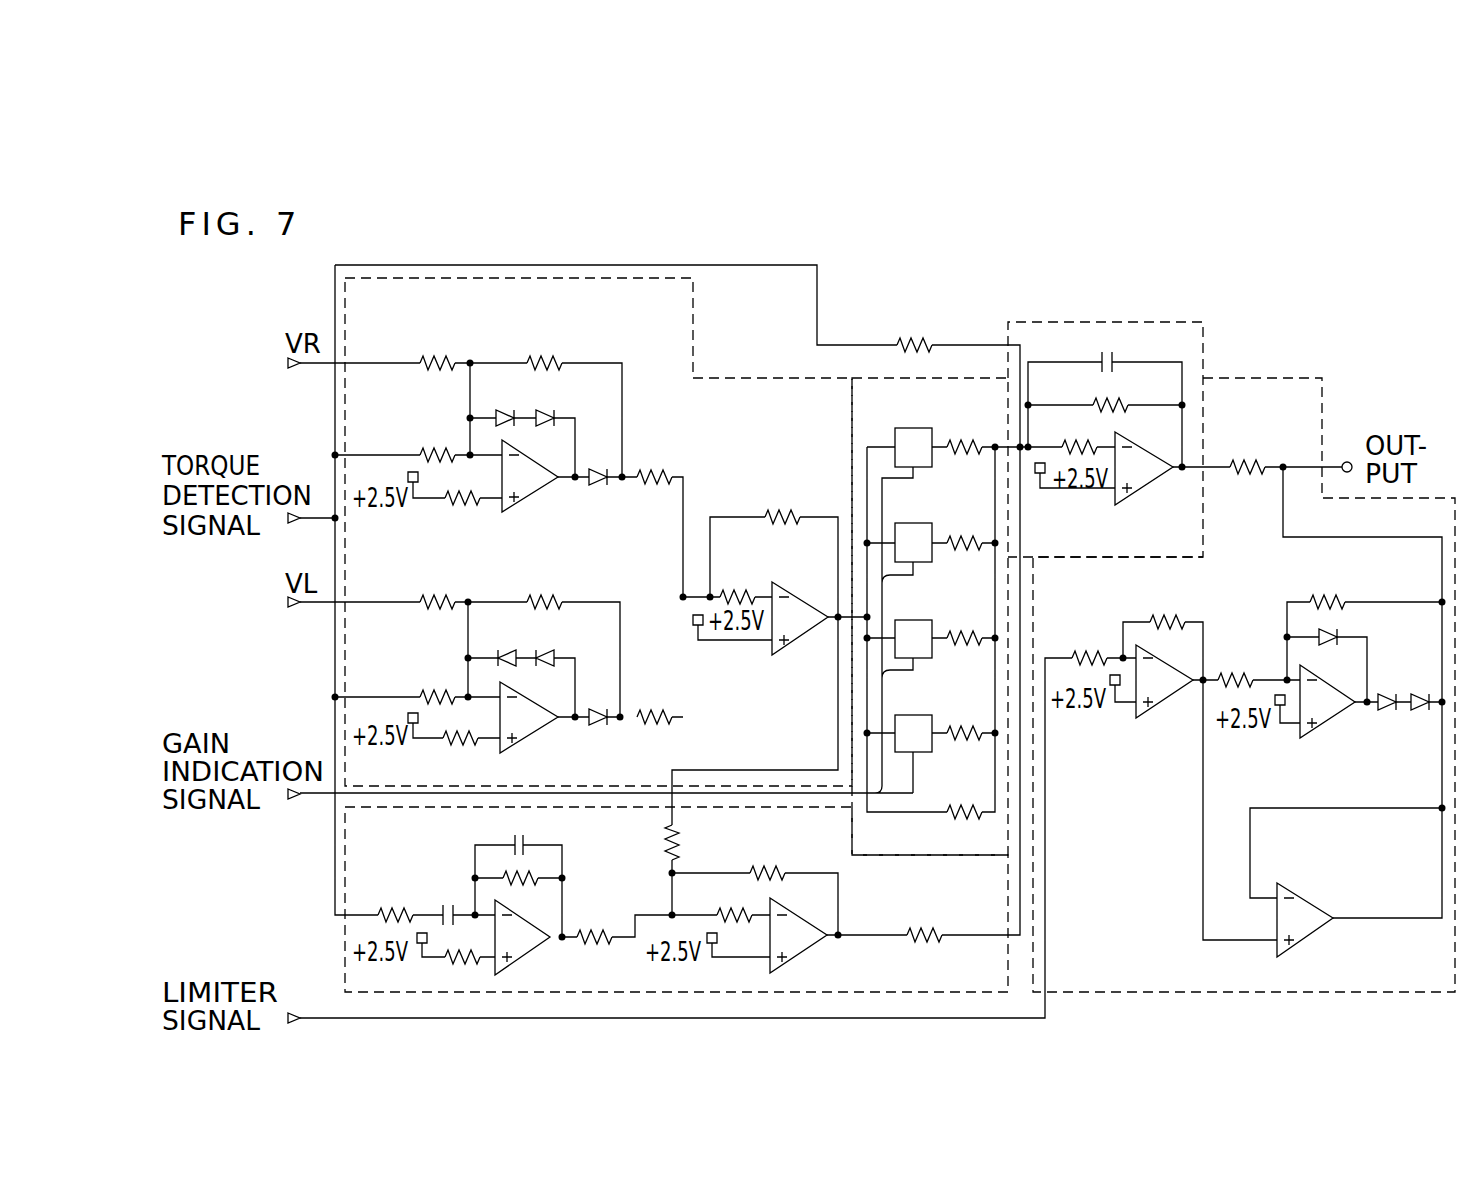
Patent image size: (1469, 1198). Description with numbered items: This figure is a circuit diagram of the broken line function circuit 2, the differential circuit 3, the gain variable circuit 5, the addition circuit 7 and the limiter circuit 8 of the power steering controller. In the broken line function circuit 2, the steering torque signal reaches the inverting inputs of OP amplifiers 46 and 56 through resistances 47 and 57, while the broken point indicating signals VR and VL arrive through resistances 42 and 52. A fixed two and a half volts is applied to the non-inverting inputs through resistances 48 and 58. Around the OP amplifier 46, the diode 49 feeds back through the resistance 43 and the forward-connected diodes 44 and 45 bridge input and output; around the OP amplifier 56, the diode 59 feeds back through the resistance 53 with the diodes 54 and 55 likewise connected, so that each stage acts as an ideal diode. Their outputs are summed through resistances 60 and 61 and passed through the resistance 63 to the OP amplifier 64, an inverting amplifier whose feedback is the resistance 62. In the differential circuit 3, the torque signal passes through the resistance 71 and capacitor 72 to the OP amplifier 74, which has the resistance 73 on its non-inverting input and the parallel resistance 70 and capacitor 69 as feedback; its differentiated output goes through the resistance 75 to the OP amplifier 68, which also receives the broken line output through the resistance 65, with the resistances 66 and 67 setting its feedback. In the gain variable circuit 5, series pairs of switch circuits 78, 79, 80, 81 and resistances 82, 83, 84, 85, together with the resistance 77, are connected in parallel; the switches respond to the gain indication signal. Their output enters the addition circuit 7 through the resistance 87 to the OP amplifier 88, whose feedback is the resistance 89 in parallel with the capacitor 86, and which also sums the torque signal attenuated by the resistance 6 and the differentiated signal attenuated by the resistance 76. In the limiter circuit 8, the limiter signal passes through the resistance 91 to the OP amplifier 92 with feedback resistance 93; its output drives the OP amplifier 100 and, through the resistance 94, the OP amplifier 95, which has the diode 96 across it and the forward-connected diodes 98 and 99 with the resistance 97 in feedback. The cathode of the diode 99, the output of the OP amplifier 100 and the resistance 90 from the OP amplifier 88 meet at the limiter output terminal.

The broken line function circuit 2 is at (693, 328).
The differential circuit 3 is at (342, 978).
The gain variable circuit 5 is at (973, 378).
The resistance 6 is at (920, 332).
The addition circuit 7 is at (1155, 322).
The limiter circuit 8 is at (1267, 377).
The resistance 42 is at (441, 350).
The resistance 43 is at (545, 350).
The diode 44 is at (502, 411).
The diode 45 is at (550, 413).
The OP amplifier 46 is at (534, 500).
The resistance 47 is at (440, 447).
The resistance 48 is at (466, 512).
The diode 49 is at (598, 469).
The resistance 52 is at (440, 592).
The resistance 53 is at (545, 592).
The diode 54 is at (502, 651).
The diode 55 is at (552, 652).
The OP amplifier 56 is at (534, 741).
The resistance 57 is at (440, 690).
The resistance 58 is at (456, 748).
The diode 59 is at (598, 708).
The resistance 60 is at (655, 469).
The resistance 61 is at (655, 707).
The resistance 62 is at (785, 509).
The resistance 63 is at (743, 586).
The OP amplifier 64 is at (788, 654).
The resistance 65 is at (693, 843).
The resistance 66 is at (778, 882).
The resistance 67 is at (738, 907).
The OP amplifier 68 is at (804, 958).
The capacitor 69 is at (520, 844).
The resistance 70 is at (517, 887).
The resistance 71 is at (392, 908).
The capacitor 72 is at (447, 902).
The resistance 73 is at (462, 969).
The OP amplifier 74 is at (528, 957).
The resistance 75 is at (592, 930).
The resistance 76 is at (938, 929).
The resistance 77 is at (967, 805).
The switch circuit 78 is at (915, 715).
The switch circuit 79 is at (915, 620).
The switch circuit 80 is at (915, 522).
The switch circuit 81 is at (915, 427).
The resistance 82 is at (965, 725).
The resistance 83 is at (965, 630).
The resistance 84 is at (965, 535).
The resistance 85 is at (965, 439).
The capacitor 86 is at (1110, 355).
The resistance 87 is at (1082, 434).
The OP amplifier 88 is at (1144, 496).
The resistance 89 is at (1100, 397).
The resistance 90 is at (1246, 454).
The resistance 91 is at (1091, 648).
The OP amplifier 92 is at (1162, 704).
The resistance 93 is at (1171, 610).
The resistance 94 is at (1242, 670).
The OP amplifier 95 is at (1318, 731).
The diode 96 is at (1338, 645).
The resistance 97 is at (1326, 589).
The diode 98 is at (1387, 692).
The diode 99 is at (1410, 714).
The OP amplifier 100 is at (1303, 946).